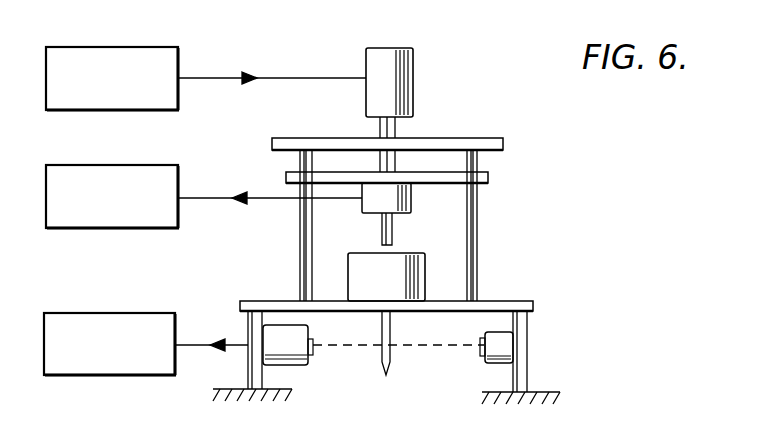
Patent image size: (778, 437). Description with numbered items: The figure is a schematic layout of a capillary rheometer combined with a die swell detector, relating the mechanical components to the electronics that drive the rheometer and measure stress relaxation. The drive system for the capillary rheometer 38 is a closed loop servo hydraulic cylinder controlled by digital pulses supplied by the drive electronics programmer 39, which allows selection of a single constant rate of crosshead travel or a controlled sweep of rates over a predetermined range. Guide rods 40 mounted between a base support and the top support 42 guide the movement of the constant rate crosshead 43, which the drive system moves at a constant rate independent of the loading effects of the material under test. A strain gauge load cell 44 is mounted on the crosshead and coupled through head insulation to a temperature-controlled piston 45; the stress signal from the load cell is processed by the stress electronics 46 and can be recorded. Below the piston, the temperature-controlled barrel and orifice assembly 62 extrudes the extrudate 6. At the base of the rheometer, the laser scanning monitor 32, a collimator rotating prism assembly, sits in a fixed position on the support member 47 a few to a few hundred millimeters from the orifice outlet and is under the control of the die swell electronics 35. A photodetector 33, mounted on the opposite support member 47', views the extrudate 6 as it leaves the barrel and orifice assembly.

The drive electronics programmer 39 is at (130, 94).
The stress electronics 46 is at (128, 212).
The die swell electronics 35 is at (125, 360).
The capillary rheometer 38 is at (415, 62).
The top support 42 is at (490, 136).
The constant rate crosshead 43 is at (489, 178).
The guide rods 40 is at (300, 256).
The strain gauge load cell 44 is at (411, 202).
The temperature-controlled piston 45 is at (392, 229).
The temperature-controlled barrel and orifice assembly 62 is at (427, 272).
The extrudate 6 is at (391, 363).
The laser scanning monitor 32 is at (292, 366).
The photodetector 33 is at (500, 341).
The support member 47 is at (210, 358).
The opposite support member 47' is at (556, 351).